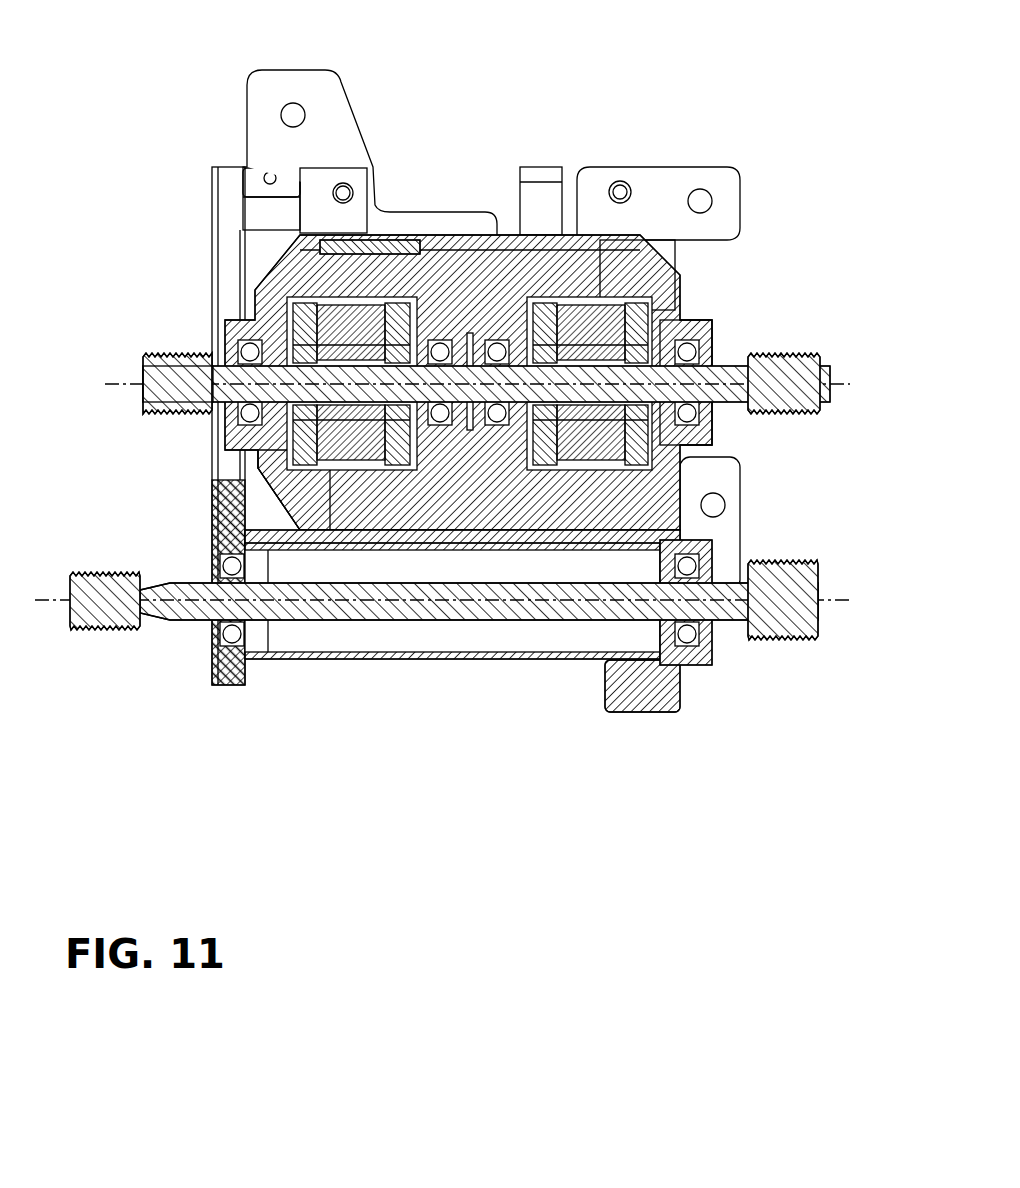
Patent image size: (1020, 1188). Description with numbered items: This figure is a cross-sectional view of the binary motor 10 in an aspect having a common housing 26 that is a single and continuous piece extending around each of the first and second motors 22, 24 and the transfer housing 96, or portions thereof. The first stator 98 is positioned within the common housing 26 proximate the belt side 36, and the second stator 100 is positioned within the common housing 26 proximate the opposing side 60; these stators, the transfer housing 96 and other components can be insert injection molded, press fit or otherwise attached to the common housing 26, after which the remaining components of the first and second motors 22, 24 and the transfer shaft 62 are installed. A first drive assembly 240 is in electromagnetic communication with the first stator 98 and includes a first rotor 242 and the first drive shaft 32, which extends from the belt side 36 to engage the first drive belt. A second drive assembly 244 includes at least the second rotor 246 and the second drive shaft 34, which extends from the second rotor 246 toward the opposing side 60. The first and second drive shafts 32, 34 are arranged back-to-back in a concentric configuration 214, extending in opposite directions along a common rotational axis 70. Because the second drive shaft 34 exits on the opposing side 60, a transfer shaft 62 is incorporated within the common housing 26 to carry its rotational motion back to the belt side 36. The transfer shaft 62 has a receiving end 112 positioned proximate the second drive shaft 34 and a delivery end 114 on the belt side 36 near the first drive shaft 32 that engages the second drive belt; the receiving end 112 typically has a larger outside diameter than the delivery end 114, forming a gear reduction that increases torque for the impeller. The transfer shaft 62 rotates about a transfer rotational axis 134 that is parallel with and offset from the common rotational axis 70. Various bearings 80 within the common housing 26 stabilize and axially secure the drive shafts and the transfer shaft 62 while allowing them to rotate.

The binary motor 10 is at (551, 95).
The first motor 22 is at (317, 283).
The second motor 24 is at (627, 250).
The common housing 26 is at (432, 232).
The first drive shaft 32 is at (180, 366).
The second drive shaft 34 is at (730, 368).
The belt side 36 is at (188, 457).
The opposing side 60 is at (778, 474).
The transfer shaft 62 is at (726, 612).
The common rotational axis 70 is at (828, 376).
The bearings 80 is at (533, 237).
The transfer housing 96 is at (440, 642).
The first stator 98 is at (337, 250).
The second stator 100 is at (612, 517).
The receiving end 112 is at (800, 625).
The delivery end 114 is at (107, 630).
The transfer rotational axis 134 is at (833, 598).
The concentric configuration 214 is at (133, 373).
The first drive assembly 240 is at (298, 478).
The first rotor 242 is at (300, 437).
The second drive assembly 244 is at (655, 290).
The second rotor 246 is at (693, 305).